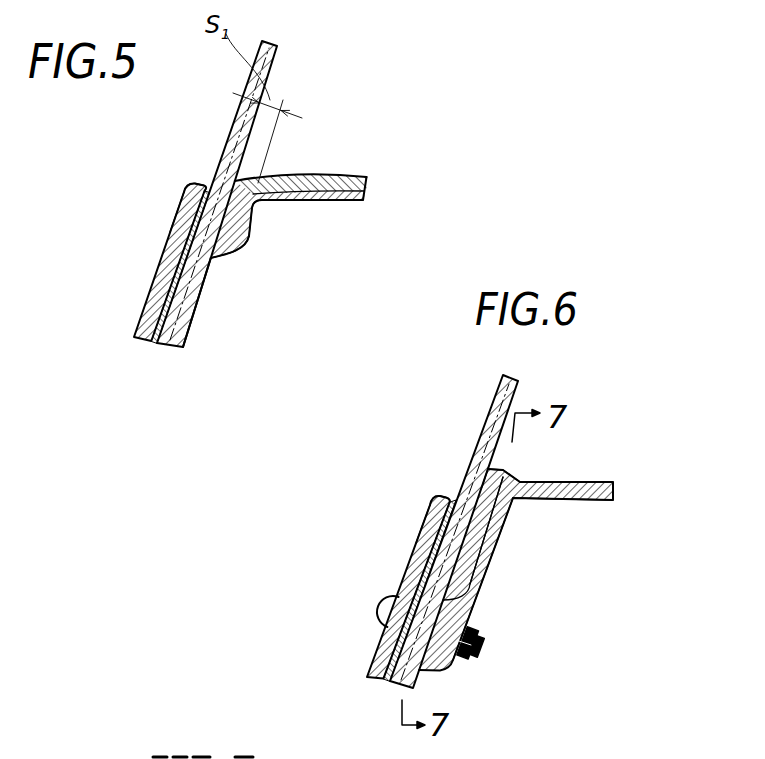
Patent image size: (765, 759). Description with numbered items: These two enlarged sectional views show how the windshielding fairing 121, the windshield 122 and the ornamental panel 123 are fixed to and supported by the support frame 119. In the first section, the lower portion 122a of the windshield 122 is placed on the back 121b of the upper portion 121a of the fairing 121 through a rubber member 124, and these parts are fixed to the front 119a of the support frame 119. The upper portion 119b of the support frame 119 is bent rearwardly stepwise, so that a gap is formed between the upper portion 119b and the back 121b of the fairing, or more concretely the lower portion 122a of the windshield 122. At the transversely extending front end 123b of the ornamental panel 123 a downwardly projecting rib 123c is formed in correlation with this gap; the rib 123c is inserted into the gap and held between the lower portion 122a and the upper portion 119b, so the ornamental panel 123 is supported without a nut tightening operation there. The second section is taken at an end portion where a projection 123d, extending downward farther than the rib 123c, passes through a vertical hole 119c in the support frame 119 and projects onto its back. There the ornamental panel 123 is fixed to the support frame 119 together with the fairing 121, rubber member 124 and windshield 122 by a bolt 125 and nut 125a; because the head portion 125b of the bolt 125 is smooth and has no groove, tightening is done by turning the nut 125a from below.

In FIG. 5, the support frame 119 is at (188, 347).
In FIG. 6, the support frame 119 is at (396, 684).
In FIG. 5, the front of the support frame 119a is at (197, 318).
In FIG. 5, the upper portion of the support frame 119b is at (253, 223).
In FIG. 6, the upper portion of the support frame 119b is at (510, 522).
In FIG. 6, the hole 119c is at (482, 458).
In FIG. 5, the windshielding fairing 121 is at (134, 340).
In FIG. 6, the windshielding fairing 121 is at (369, 669).
In FIG. 5, the upper portion of the fairing 121a is at (175, 231).
In FIG. 6, the upper portion of the fairing 121a is at (421, 538).
In FIG. 5, the back of the upper portion of the fairing 121b is at (178, 199).
In FIG. 6, the back of the upper portion of the fairing 121b is at (431, 512).
In FIG. 5, the windshield 122 is at (277, 67).
In FIG. 6, the windshield 122 is at (504, 393).
In FIG. 5, the lower portion of the windshield 122a is at (185, 290).
In FIG. 6, the lower portion of the windshield 122a is at (414, 580).
In FIG. 5, the ornamental panel 123 is at (347, 178).
In FIG. 6, the ornamental panel 123 is at (614, 485).
In FIG. 5, the front end of the ornamental panel 123b is at (232, 178).
In FIG. 6, the front end of the ornamental panel 123b is at (494, 457).
In FIG. 5, the rib 123c is at (244, 242).
In FIG. 6, the rib 123c is at (500, 547).
In FIG. 6, the projection 123d is at (474, 607).
In FIG. 5, the rubber member 124 is at (160, 270).
In FIG. 6, the rubber member 124 is at (382, 645).
In FIG. 6, the bolt 125 is at (484, 647).
In FIG. 6, the nut 125a is at (459, 660).
In FIG. 6, the head portion of the bolt 125b is at (380, 600).